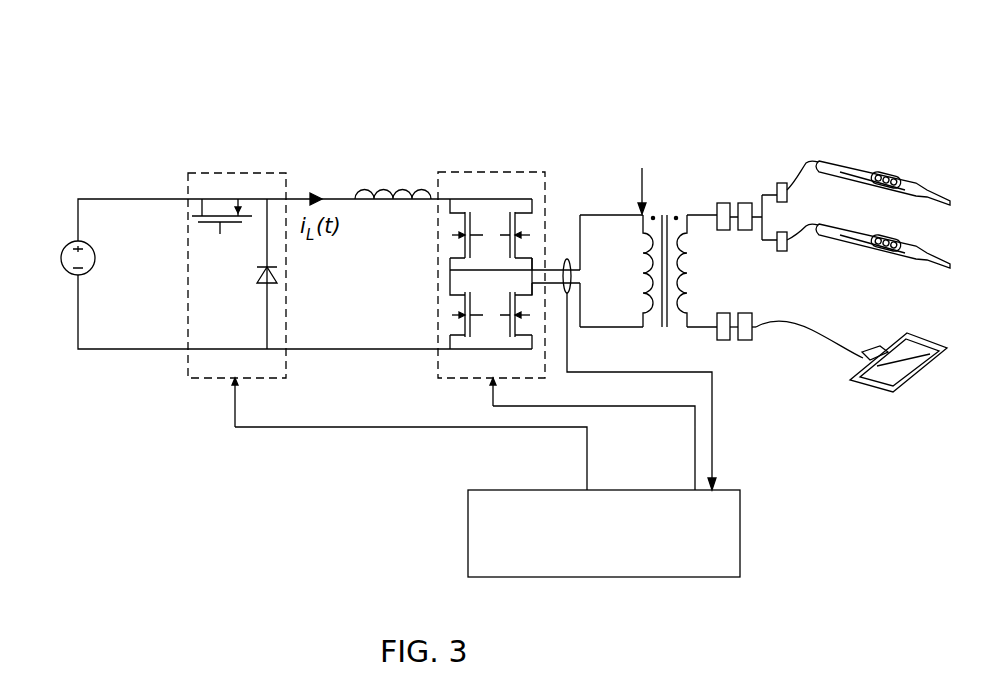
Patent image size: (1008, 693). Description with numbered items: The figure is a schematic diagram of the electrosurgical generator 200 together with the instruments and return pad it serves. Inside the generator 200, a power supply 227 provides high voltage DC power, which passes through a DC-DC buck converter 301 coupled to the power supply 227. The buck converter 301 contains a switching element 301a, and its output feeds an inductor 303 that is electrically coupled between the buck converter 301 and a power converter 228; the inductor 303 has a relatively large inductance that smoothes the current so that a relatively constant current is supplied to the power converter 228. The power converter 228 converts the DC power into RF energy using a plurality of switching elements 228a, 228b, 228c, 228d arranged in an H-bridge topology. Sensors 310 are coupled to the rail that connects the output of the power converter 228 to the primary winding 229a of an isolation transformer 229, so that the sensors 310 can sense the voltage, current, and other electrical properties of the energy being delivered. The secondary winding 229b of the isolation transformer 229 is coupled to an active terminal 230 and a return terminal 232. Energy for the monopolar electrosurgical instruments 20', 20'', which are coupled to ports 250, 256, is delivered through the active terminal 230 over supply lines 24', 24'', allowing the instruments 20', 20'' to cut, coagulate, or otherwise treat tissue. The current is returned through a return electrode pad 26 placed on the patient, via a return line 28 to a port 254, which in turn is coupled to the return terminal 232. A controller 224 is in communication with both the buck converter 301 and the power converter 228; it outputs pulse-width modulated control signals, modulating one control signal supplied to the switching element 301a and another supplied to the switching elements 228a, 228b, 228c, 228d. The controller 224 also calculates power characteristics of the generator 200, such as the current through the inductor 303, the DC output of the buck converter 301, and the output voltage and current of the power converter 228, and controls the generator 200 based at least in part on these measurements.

The generator 200 is at (132, 119).
The power supply 227 is at (78, 241).
The DC-DC buck converter 301 is at (252, 113).
The switching element 301a is at (232, 226).
The inductor 303 is at (358, 196).
The power converter 228 is at (456, 172).
The switching element 228a is at (450, 262).
The switching element 228b is at (450, 326).
The switching element 228c is at (532, 236).
The switching element 228d is at (532, 342).
The sensors 310 is at (567, 258).
The isolation transformer 229 is at (670, 215).
The primary winding 229a is at (610, 327).
The secondary winding 229b is at (702, 327).
The active terminal 230 is at (720, 203).
The return terminal 232 is at (722, 313).
The port 250 is at (783, 183).
The port 256 is at (783, 251).
The supply line 24' is at (813, 138).
The supply line 24'' is at (813, 260).
The monopolar electrosurgical instrument 20' is at (886, 165).
The monopolar electrosurgical instrument 20'' is at (883, 272).
The port 254 is at (745, 340).
The return line 28 is at (820, 341).
The return electrode pad 26 is at (910, 380).
The controller 224 is at (482, 490).